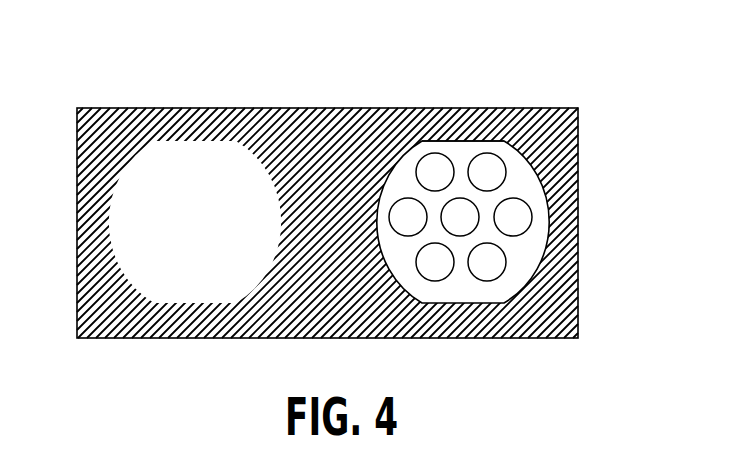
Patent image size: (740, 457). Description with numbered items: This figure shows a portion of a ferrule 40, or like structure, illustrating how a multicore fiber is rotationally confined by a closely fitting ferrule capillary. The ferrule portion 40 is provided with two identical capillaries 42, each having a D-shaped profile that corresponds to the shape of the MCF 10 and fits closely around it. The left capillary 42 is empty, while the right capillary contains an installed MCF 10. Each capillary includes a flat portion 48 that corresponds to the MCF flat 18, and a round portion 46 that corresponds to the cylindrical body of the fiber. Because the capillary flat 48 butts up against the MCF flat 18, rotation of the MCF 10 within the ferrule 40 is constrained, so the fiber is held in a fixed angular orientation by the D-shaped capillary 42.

The ferrule 40 is at (348, 42).
The capillary 42 is at (132, 232).
The flat portion 48 is at (190, 153).
The round portion 46 is at (243, 276).
The MCF 10 is at (522, 190).
The MCF flat 18 is at (464, 121).